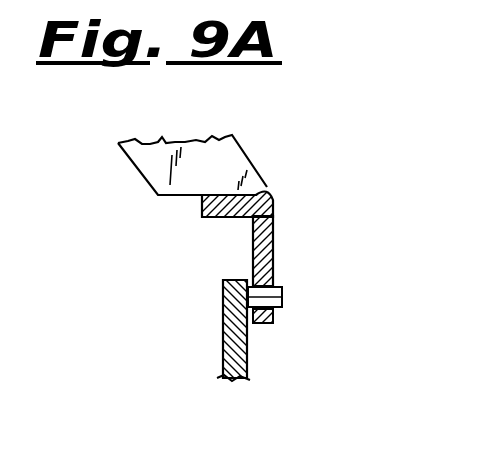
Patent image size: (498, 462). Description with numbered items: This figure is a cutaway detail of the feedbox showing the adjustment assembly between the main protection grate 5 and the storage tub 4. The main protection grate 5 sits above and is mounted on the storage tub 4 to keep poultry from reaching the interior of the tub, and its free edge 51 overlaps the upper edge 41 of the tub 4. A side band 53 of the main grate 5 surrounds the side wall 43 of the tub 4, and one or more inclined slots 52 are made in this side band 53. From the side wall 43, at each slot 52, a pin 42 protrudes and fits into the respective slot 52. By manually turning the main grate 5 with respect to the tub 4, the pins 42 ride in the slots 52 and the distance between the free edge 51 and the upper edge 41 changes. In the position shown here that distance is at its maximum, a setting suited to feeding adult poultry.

The storage tub 4 is at (237, 336).
The upper edge 41 is at (230, 280).
The pin 42 is at (282, 300).
The side wall 43 is at (225, 358).
The main protection grate 5 is at (237, 227).
The free edge 51 is at (266, 186).
The slot 52 is at (273, 320).
The side band 53 is at (275, 238).